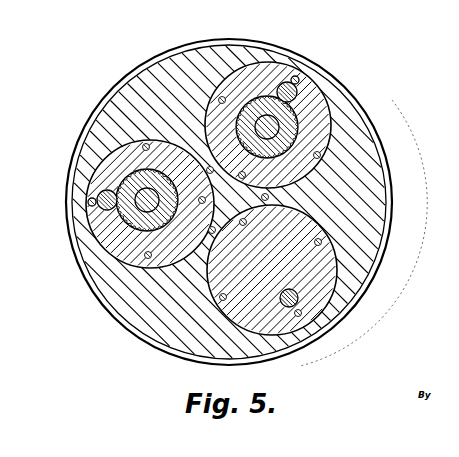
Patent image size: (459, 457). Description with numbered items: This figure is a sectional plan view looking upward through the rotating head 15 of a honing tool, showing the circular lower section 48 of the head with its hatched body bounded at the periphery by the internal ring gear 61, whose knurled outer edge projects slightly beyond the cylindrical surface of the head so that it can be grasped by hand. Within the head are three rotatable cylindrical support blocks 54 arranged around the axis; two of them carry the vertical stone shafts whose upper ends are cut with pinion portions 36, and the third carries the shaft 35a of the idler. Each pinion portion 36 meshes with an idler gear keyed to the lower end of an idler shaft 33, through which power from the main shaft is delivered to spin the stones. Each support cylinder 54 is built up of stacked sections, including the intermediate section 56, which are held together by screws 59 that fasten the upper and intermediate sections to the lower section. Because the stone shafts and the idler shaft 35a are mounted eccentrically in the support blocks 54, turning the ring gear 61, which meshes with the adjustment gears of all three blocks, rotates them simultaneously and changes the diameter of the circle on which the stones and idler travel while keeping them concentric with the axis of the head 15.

The head 15 is at (262, 32).
The idler shaft 33 is at (278, 127).
The shaft of the idler 35a is at (291, 307).
The pinion portion 36 is at (293, 94).
The lower section 48 is at (203, 53).
The rotatable cylindrical support block 54 is at (118, 141).
The intermediate section 56 is at (327, 134).
The screw 59 is at (296, 78).
The internal ring gear 61 is at (392, 207).